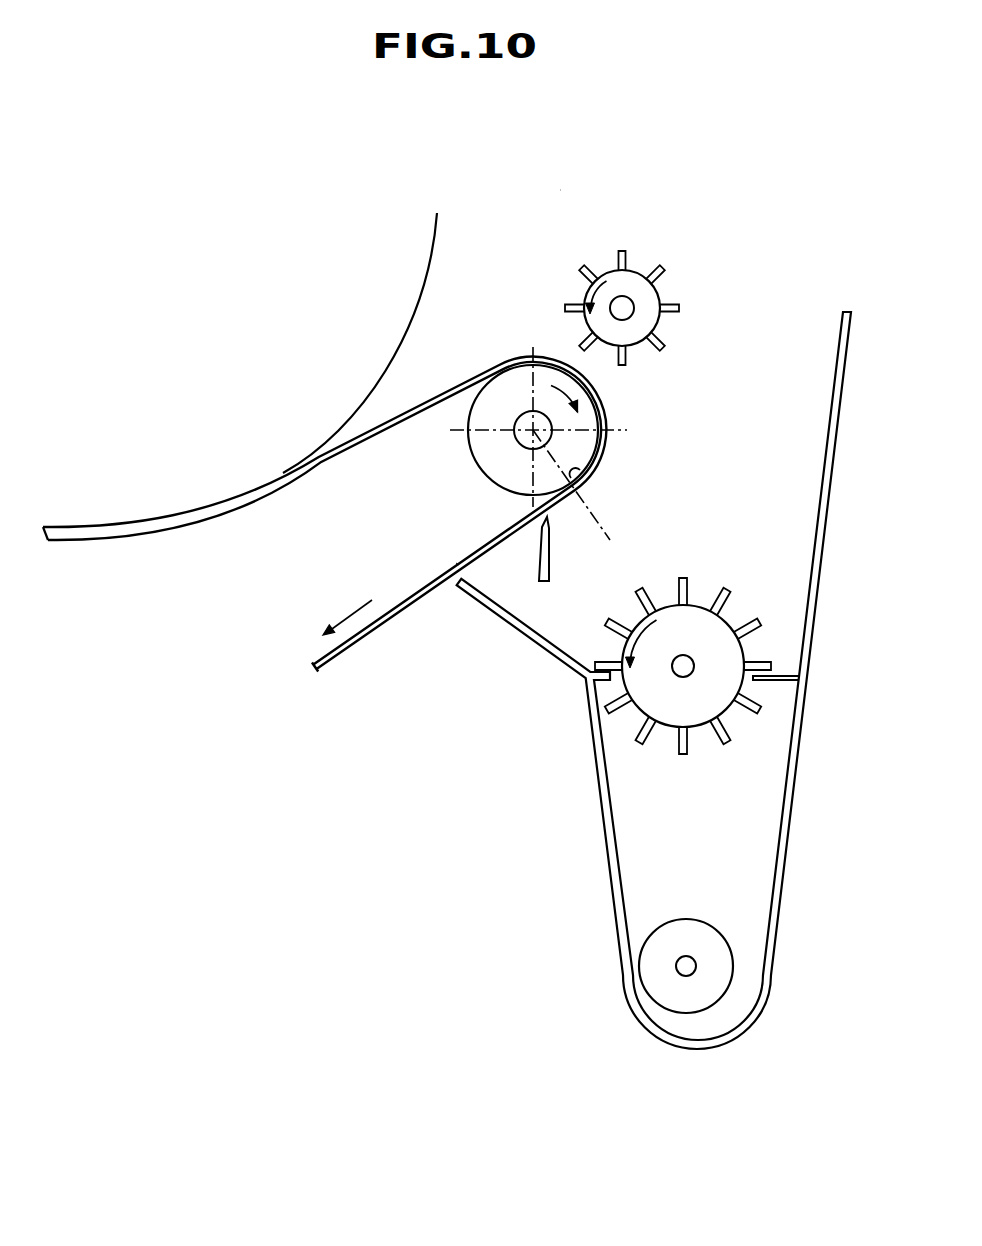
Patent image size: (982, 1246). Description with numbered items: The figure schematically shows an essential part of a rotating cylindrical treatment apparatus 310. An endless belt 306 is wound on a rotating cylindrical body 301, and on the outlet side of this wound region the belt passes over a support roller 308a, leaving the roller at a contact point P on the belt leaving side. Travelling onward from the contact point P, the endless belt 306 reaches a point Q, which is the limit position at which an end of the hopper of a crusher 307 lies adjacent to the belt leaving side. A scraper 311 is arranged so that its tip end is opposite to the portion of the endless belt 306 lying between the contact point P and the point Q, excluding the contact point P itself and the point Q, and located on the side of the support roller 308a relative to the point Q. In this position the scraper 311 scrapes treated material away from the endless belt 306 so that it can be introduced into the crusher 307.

The rotating cylindrical treatment apparatus 310 is at (556, 192).
The cylindrical body 301 is at (432, 252).
The endless belt 306 is at (447, 391).
The support roller 308a is at (472, 456).
The contact point P is at (593, 470).
The point Q is at (458, 564).
The scraper 311 is at (553, 560).
The crusher 307 is at (732, 378).